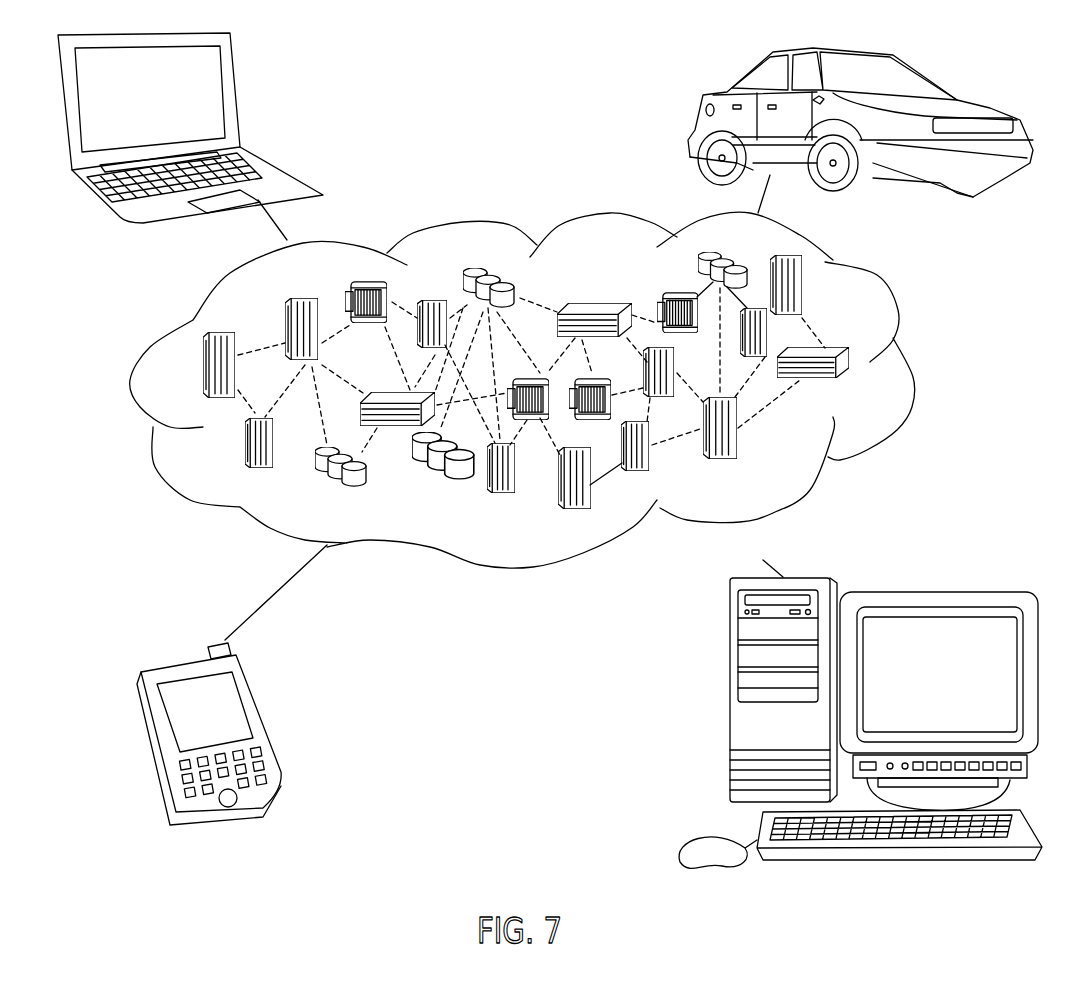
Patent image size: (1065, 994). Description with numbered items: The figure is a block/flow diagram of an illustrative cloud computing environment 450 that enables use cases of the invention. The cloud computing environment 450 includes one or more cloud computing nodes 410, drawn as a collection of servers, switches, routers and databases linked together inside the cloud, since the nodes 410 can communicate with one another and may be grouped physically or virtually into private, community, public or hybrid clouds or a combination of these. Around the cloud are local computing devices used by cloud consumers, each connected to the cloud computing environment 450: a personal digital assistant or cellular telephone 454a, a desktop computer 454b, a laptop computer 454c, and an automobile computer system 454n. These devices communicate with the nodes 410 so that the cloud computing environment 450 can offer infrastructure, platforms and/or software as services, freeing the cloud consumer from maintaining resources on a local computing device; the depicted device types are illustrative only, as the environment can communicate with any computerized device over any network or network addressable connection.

The cloud computing nodes 410 is at (867, 385).
The cloud computing environment 450 is at (898, 300).
The personal digital assistant (PDA) or cellular telephone 454a is at (260, 712).
The desktop computer 454b is at (730, 703).
The laptop computer 454c is at (237, 87).
The automobile computer system 454n is at (700, 98).